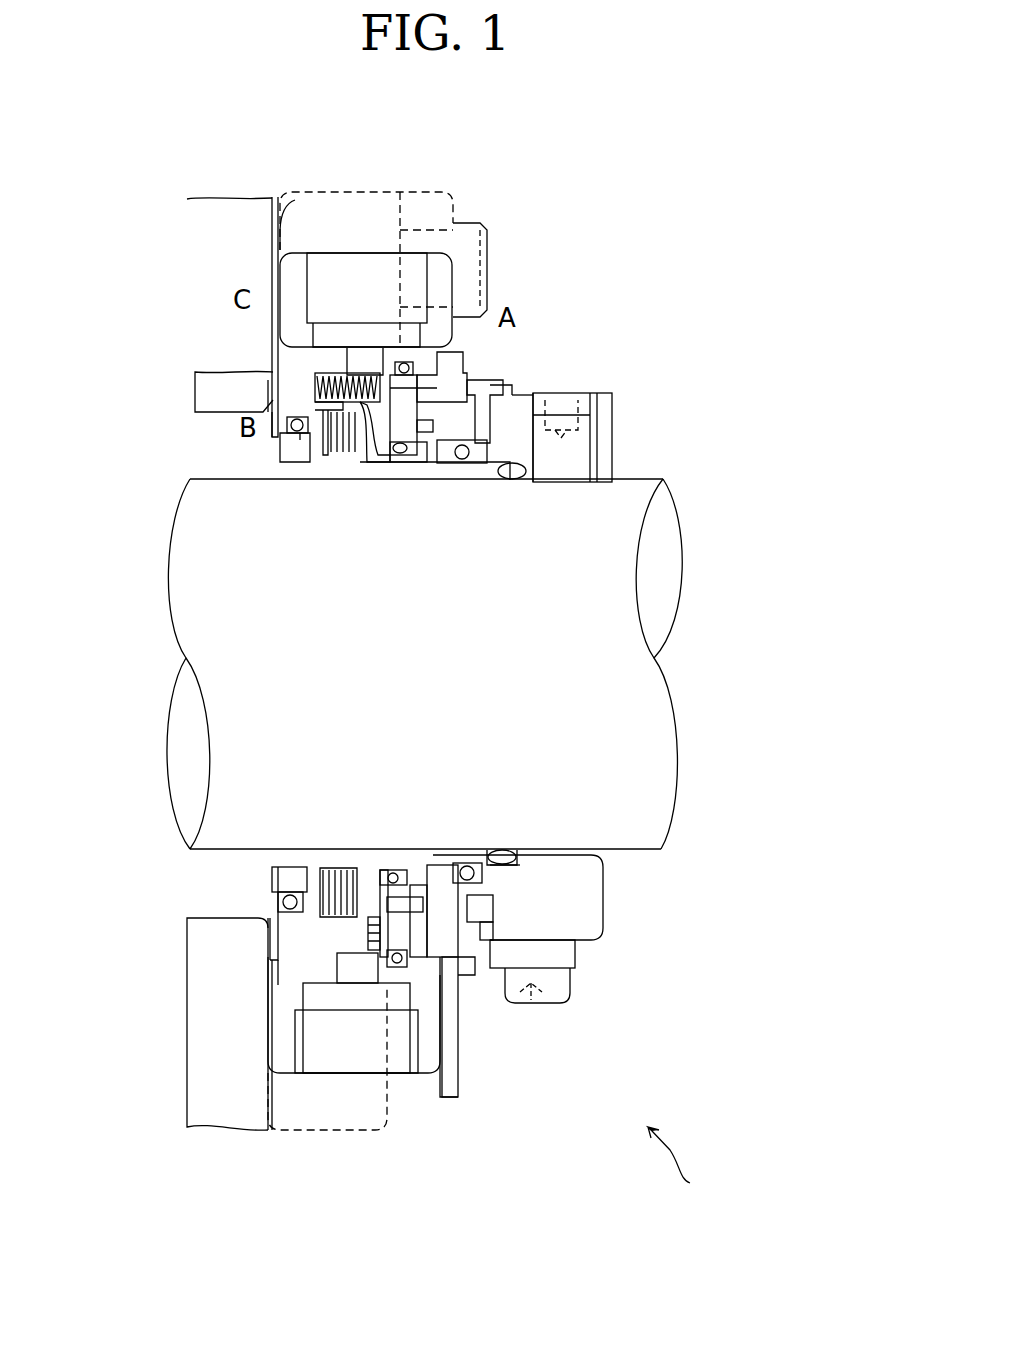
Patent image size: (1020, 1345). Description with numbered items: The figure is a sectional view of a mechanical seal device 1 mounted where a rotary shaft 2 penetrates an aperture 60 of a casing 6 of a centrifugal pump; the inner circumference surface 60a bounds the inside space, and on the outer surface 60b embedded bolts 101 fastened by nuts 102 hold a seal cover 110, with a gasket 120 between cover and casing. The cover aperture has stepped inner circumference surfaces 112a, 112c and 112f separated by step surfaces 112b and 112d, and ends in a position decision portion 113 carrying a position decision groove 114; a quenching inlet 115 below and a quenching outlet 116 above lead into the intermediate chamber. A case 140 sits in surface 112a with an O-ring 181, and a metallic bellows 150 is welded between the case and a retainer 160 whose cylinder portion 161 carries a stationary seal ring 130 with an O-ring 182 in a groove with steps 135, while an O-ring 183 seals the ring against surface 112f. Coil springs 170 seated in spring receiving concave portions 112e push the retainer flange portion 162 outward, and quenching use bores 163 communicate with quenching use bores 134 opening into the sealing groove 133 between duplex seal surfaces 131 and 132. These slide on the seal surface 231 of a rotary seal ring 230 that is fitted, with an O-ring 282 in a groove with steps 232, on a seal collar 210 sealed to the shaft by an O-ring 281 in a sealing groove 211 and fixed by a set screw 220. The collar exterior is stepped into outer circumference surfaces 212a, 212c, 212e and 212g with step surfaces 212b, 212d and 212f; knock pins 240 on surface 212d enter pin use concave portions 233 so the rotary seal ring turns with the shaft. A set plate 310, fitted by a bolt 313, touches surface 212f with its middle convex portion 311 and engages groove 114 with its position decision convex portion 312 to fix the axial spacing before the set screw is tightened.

The mechanical seal device 1 is at (720, 1200).
The rotary shaft 2 is at (622, 628).
The casing 6 is at (232, 230).
The aperture 60 is at (237, 460).
The inner circumference surface 60a is at (227, 418).
The outer surface 60b is at (281, 232).
The embedded bolts 101 is at (500, 227).
The nuts 102 is at (430, 202).
The seal cover 110 is at (440, 275).
The inner circumference surface 112a is at (272, 872).
The step surface 112b is at (267, 928).
The inner circumference surface 112c is at (288, 950).
The step surface 112d is at (300, 962).
The spring receiving concave portions 112e is at (337, 365).
The inner circumference surface 112f is at (345, 1000).
The position decision portion 113 is at (453, 1012).
The position decision groove 114 is at (468, 962).
The quenching inlet 115 is at (353, 1062).
The quenching outlet 116 is at (362, 273).
The gasket 120 is at (263, 940).
The stationary seal ring 130 is at (470, 380).
The seal surface 131 is at (403, 430).
The seal surface 132 is at (433, 468).
The sealing groove 133 is at (400, 470).
The quenching use bores 134 is at (372, 442).
The groove with steps 135 is at (376, 930).
The case 140 is at (277, 457).
The metallic bellows 150 is at (360, 905).
The retainer 160 is at (390, 880).
The cylinder portion 161 is at (420, 905).
The flange portion 162 is at (340, 935).
The quenching use bores 163 is at (382, 868).
The coil springs 170 is at (273, 380).
The O-ring 181 is at (296, 434).
The O-ring 182 is at (400, 885).
The O-ring 183 is at (462, 870).
The seal collar 210 is at (610, 453).
The sealing groove 211 is at (512, 852).
The outer circumference surface 212a is at (456, 470).
The step surface 212b is at (603, 388).
The outer circumference surface 212c is at (540, 475).
The step surface 212d is at (492, 388).
The outer circumference surface 212e is at (513, 400).
The step surface 212f is at (497, 410).
The outer circumference surface 212g is at (620, 420).
The set screw 220 is at (620, 420).
The rotary seal ring 230 is at (445, 990).
The seal surface 231 is at (507, 480).
The groove with steps 232 is at (545, 865).
The pin use concave portions 233 is at (548, 957).
The knock pins 240 is at (500, 905).
The O-ring 281 is at (510, 858).
The O-ring 282 is at (505, 860).
The set plate 310 is at (570, 985).
The middle convex portion 311 is at (487, 930).
The position decision convex portion 312 is at (484, 938).
The bolt 313 is at (542, 1008).